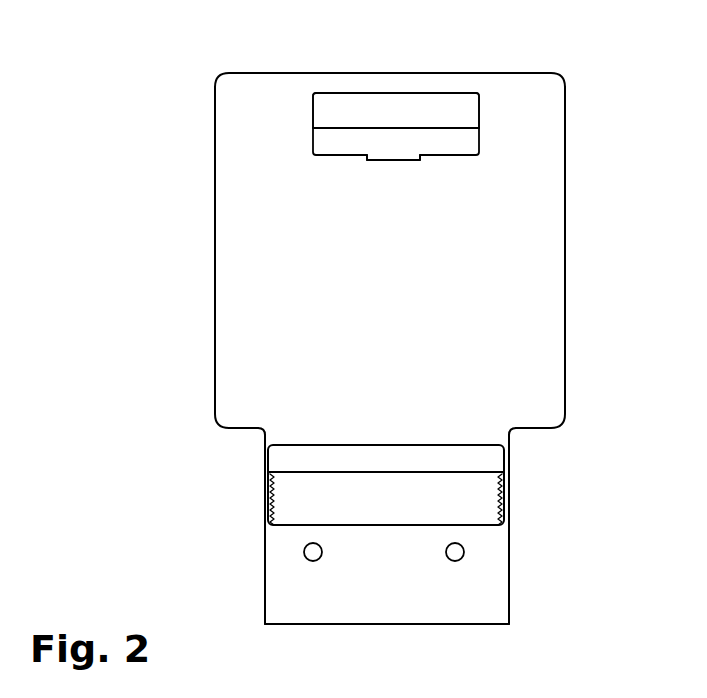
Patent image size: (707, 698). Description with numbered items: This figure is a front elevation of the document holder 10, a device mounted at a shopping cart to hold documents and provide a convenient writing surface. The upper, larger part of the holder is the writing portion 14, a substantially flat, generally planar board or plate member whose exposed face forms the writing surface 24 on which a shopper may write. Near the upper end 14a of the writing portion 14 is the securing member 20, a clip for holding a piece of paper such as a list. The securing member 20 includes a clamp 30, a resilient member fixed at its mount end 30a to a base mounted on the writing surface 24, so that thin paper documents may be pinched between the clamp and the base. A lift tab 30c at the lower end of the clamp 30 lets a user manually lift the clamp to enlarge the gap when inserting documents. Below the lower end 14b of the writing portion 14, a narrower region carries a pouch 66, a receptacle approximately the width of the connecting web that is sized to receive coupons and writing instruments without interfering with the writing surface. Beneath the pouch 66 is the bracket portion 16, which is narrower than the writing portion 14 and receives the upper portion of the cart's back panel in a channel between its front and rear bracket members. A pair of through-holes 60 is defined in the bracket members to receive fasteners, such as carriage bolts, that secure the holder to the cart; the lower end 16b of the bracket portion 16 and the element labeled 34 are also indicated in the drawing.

The document holder 10 is at (100, 93).
The writing portion 14 is at (565, 292).
The upper end of writing portion 14a is at (513, 62).
The lower end of writing portion 14b is at (535, 450).
The bracket portion 16 is at (509, 560).
The bottom end of flap panel 16b is at (522, 620).
The securing member 20 is at (375, 108).
The writing surface 24 is at (281, 252).
The clamp 30 is at (479, 145).
The mount end 30a is at (479, 128).
The lift tab 30c is at (399, 160).
The pocket opening 34 is at (313, 108).
The through-holes 60 is at (305, 560).
The pouch 66 is at (285, 496).